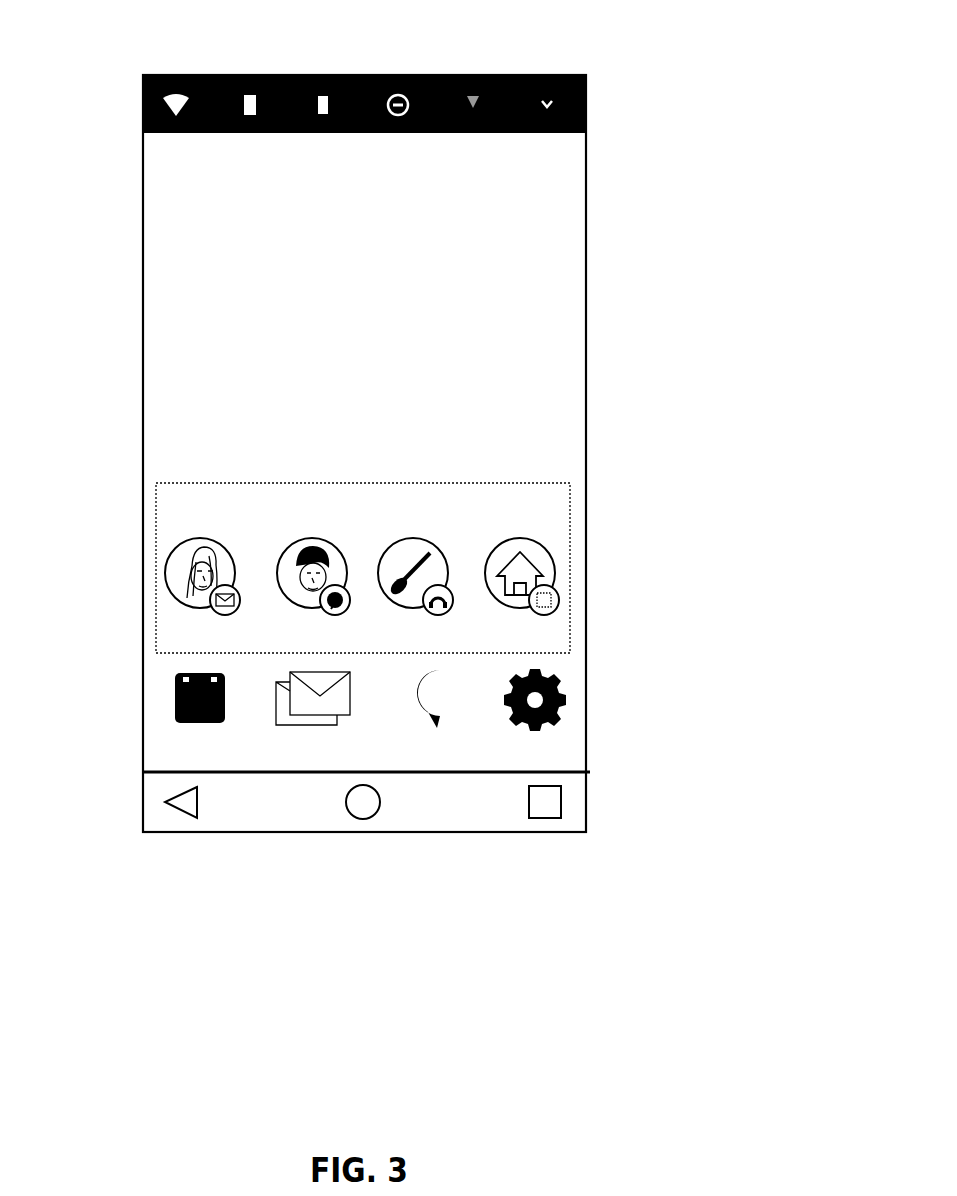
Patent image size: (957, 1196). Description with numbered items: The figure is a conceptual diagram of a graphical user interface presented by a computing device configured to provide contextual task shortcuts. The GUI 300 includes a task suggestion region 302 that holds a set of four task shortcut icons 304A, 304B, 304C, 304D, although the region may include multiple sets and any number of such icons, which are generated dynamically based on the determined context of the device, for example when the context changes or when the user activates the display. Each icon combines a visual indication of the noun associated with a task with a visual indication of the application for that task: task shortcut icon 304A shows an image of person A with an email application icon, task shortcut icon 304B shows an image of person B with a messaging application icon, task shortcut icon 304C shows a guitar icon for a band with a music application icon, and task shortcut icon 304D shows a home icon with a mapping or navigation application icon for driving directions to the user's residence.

The GUI 300 is at (533, 75).
The task suggestion region 302 is at (178, 482).
The task shortcut icon 304A is at (173, 552).
The task shortcut icon 304B is at (310, 538).
The task shortcut icon 304C is at (410, 540).
The task shortcut icon 304D is at (547, 553).